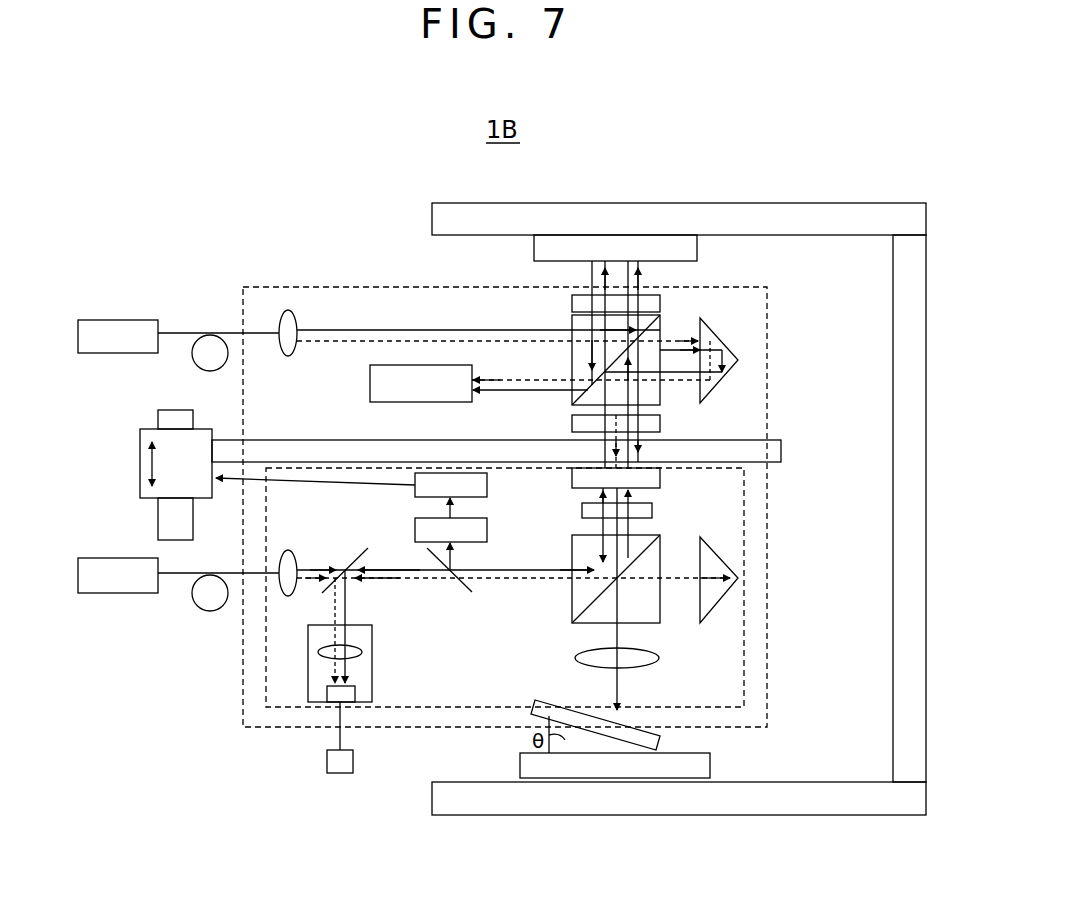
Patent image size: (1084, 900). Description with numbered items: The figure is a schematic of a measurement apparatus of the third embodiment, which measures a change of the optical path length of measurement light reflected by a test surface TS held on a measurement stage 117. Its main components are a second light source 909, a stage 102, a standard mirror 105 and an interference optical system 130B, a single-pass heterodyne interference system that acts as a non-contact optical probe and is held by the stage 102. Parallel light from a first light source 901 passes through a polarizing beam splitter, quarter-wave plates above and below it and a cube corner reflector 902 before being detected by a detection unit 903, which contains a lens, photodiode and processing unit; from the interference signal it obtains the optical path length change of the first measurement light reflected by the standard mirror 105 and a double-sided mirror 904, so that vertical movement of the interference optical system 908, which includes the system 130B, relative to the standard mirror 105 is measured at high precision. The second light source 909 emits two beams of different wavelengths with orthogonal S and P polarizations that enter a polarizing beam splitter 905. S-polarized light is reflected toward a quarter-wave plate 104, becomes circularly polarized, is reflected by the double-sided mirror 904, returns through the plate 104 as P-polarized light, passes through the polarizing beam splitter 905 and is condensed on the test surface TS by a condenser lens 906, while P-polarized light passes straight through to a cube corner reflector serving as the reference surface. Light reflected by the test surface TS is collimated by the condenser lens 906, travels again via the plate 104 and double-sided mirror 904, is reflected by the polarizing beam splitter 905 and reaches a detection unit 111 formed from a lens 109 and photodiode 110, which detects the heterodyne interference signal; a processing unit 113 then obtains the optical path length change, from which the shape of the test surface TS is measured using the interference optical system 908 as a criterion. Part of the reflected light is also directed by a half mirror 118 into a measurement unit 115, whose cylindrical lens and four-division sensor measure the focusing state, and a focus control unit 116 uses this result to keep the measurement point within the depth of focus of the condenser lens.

The first light source 901 is at (105, 320).
The second light source 909 is at (105, 558).
The interference optical system 908 is at (340, 287).
The standard mirror 105 is at (534, 252).
The cube corner reflector 902 is at (712, 340).
The detection unit 903 is at (370, 392).
The stage 102 is at (733, 450).
The double-sided mirror 904 is at (660, 478).
The λ/4 plate 104 is at (652, 511).
The polarizing beam splitter 905 is at (575, 558).
The focus control unit 116 is at (487, 483).
The measurement unit 115 is at (487, 530).
The detection unit 111 is at (358, 625).
The half mirror 118 is at (462, 590).
The lens 109 is at (362, 652).
The photodiode 110 is at (355, 695).
The processing unit 113 is at (353, 762).
The interference optical system 130B is at (266, 680).
The condenser lens 906 is at (659, 658).
The test surface TS is at (662, 747).
The measurement stage 117 is at (700, 765).